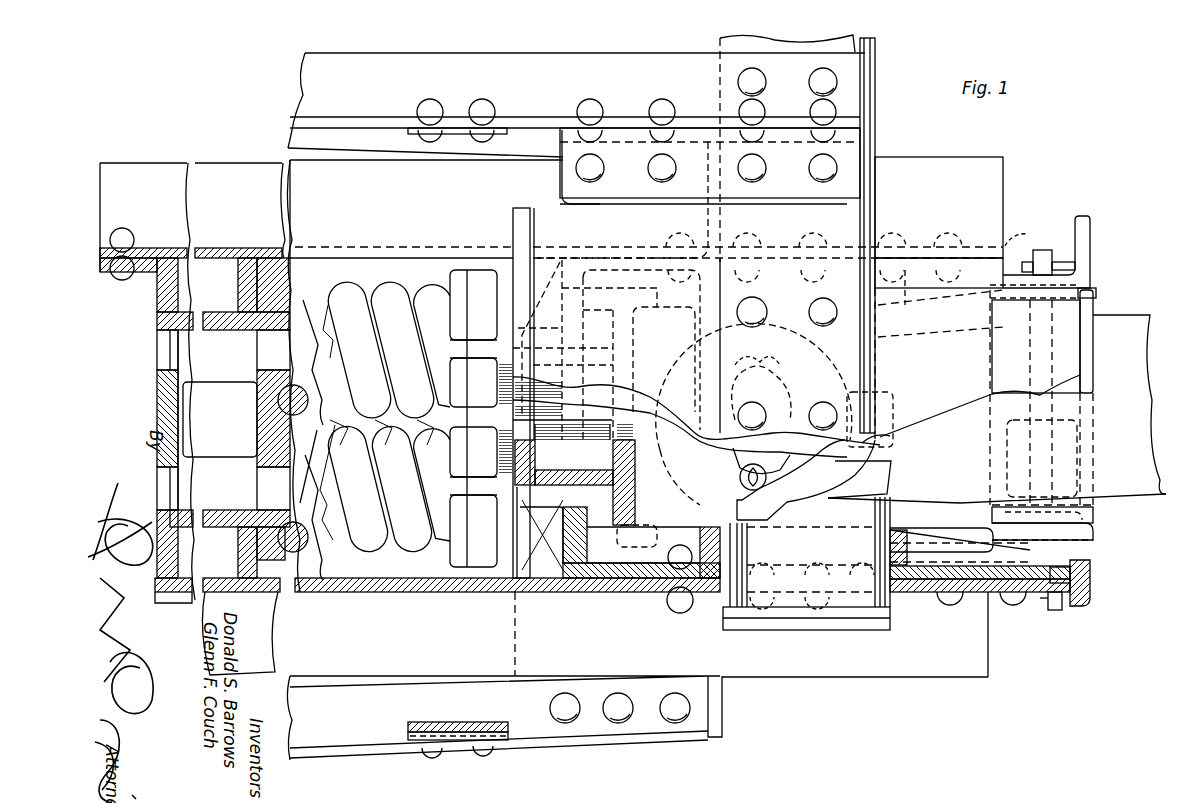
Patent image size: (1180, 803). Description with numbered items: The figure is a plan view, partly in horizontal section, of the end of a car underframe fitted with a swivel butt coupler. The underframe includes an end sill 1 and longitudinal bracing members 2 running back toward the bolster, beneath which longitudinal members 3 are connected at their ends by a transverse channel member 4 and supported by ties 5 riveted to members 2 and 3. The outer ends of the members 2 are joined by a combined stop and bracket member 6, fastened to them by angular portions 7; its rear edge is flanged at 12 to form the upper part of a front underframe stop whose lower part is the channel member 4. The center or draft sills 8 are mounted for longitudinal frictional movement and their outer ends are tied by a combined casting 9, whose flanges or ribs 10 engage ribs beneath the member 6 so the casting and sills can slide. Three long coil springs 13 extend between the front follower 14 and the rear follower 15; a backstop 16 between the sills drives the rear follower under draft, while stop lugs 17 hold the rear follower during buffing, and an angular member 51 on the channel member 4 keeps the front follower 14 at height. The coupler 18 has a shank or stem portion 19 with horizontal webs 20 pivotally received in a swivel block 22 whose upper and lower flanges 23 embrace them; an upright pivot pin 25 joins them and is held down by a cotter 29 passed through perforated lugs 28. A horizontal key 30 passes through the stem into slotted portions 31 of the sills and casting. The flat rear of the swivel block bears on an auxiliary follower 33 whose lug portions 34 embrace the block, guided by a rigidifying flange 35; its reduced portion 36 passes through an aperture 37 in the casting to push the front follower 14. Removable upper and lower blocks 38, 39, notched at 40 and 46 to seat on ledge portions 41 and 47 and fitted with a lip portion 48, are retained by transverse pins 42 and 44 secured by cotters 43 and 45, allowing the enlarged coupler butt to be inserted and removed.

The end sill 1 is at (876, 123).
The longitudinal bracing members 2 is at (467, 61).
The longitudinal members 3 is at (290, 150).
The transverse channel member 4 is at (722, 698).
The ties 5 is at (408, 130).
The combined stop and bracket member 6 is at (552, 220).
The angular portions 7 is at (672, 196).
The center or draft sills 8 is at (196, 163).
The combined casting 9 is at (920, 415).
The flanges or ribs 10 is at (922, 268).
The flange 12 is at (514, 245).
The coil springs 13 is at (382, 293).
The front follower 14 is at (456, 268).
The rear follower 15 is at (258, 310).
The backstop 16 is at (157, 300).
The stop lugs 17 is at (240, 288).
The coupler 18 is at (997, 395).
The shank or stem portion 19 is at (912, 532).
The horizontal webs 20 is at (790, 505).
The swivel block 22 is at (644, 558).
The upper and lower flanges or webs 23 is at (859, 479).
The pivot pin 25 is at (765, 405).
The lugs 28 is at (762, 388).
The retaining cotter 29 is at (740, 480).
The horizontal key 30 is at (810, 630).
The slotted portions 31 is at (720, 585).
The auxiliary follower or force-transmitting member 33 is at (624, 478).
The lug portions 34 is at (650, 307).
The rigidifying flange 35 is at (948, 290).
The decreased cross-section portion 36 is at (606, 480).
The aperture 37 is at (548, 520).
The upper block 38 is at (1070, 392).
The lower block 39 is at (1094, 514).
The notches 40 is at (1041, 397).
The supporting ledge portions 41 is at (1096, 294).
The transverse pin 42 is at (1040, 250).
The cotters 43 is at (1062, 275).
The transverse pin 44 is at (1045, 606).
The cotters 45 is at (1058, 606).
The notch 46 is at (1094, 535).
The ledge portions 47 is at (1090, 548).
The lip portion 48 is at (1088, 345).
The angular member 51 is at (472, 268).